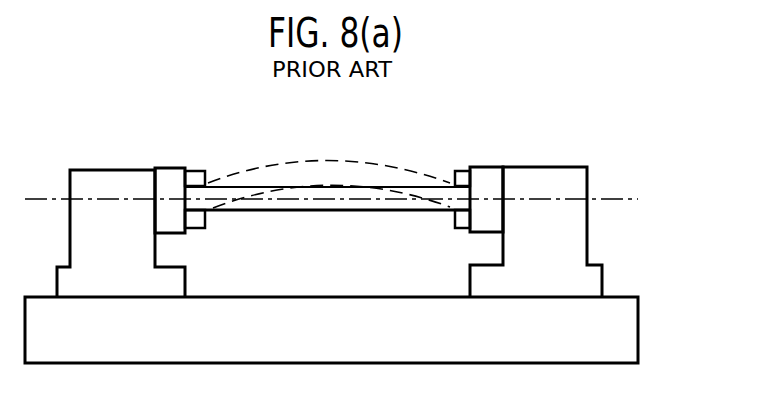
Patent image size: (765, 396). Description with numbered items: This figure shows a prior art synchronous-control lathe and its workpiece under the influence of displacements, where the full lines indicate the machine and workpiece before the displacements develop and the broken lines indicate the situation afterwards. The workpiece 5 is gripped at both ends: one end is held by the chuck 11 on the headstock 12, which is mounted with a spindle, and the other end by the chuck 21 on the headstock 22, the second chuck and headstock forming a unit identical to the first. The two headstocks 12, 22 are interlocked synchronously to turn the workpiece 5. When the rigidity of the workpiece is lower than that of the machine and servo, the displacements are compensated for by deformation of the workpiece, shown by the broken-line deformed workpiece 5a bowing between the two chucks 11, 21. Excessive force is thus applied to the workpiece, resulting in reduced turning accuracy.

The headstock 12 is at (117, 177).
The chuck 11 is at (167, 177).
The workpiece 5 is at (337, 203).
The deformed workpiece 5a is at (318, 160).
The chuck 21 is at (490, 172).
The headstock 22 is at (538, 168).